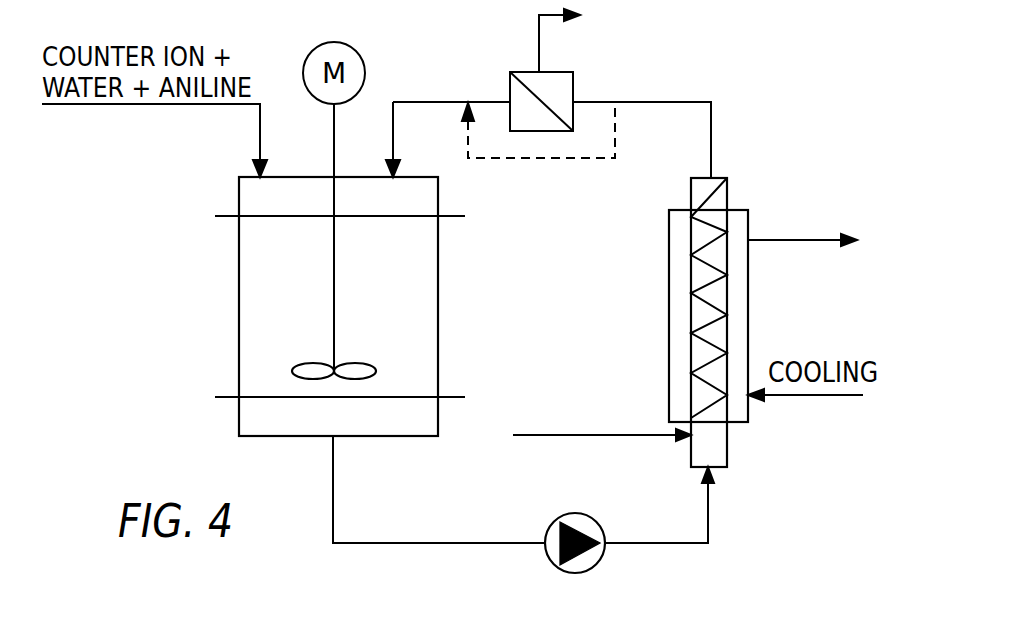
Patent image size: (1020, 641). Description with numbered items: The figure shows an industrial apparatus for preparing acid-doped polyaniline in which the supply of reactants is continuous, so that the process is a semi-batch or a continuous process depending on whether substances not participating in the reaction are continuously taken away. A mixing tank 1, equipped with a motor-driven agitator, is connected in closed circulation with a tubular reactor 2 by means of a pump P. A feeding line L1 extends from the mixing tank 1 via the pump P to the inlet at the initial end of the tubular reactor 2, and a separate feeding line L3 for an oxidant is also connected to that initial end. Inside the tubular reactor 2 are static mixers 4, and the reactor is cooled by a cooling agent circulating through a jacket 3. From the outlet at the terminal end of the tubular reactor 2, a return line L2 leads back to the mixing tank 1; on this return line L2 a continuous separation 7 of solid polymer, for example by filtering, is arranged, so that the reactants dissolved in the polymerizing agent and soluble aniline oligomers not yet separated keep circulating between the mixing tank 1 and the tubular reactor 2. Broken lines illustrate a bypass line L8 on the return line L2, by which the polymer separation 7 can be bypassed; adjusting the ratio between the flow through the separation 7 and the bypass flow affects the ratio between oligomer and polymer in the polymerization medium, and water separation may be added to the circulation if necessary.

The mixing tank 1 is at (238, 250).
The tubular reactor 2 is at (691, 188).
The jacket 3 is at (748, 274).
The static mixers 4 is at (707, 216).
The continuous separation 7 is at (510, 92).
The feeding line L1 is at (456, 544).
The return line L2 is at (711, 130).
The feeding line for an oxidant L3 is at (572, 438).
The bypass line L8 is at (565, 160).
The pump P is at (608, 558).